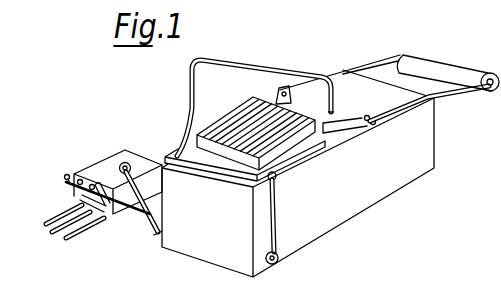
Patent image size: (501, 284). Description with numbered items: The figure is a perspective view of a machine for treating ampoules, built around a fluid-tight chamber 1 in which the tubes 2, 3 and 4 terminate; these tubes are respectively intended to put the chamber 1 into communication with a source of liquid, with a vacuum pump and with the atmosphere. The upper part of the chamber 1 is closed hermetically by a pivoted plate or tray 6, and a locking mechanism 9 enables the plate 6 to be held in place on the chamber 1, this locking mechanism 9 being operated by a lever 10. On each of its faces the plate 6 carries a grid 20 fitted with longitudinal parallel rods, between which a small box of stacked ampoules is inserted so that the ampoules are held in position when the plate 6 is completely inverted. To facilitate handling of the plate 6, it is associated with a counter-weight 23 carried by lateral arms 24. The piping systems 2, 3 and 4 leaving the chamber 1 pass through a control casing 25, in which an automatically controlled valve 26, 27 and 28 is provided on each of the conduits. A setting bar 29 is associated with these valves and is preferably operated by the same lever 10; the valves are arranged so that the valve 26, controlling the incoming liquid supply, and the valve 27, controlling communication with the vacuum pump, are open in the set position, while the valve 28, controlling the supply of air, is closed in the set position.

The fluid-tight chamber 1 is at (413, 143).
The tube 2 is at (259, 67).
The tube 3 is at (62, 238).
The tube 4 is at (78, 238).
The plate or tray 6 is at (213, 168).
The locking mechanism 9 is at (277, 216).
The lever 10 is at (127, 213).
The grid 20 is at (228, 112).
The counter-weight 23 is at (438, 72).
The lateral arms 24 is at (380, 68).
The control casing 25 is at (132, 157).
The valve 26 is at (66, 175).
The valve 27 is at (70, 187).
The valve 28 is at (115, 226).
The setting bar 29 is at (113, 192).